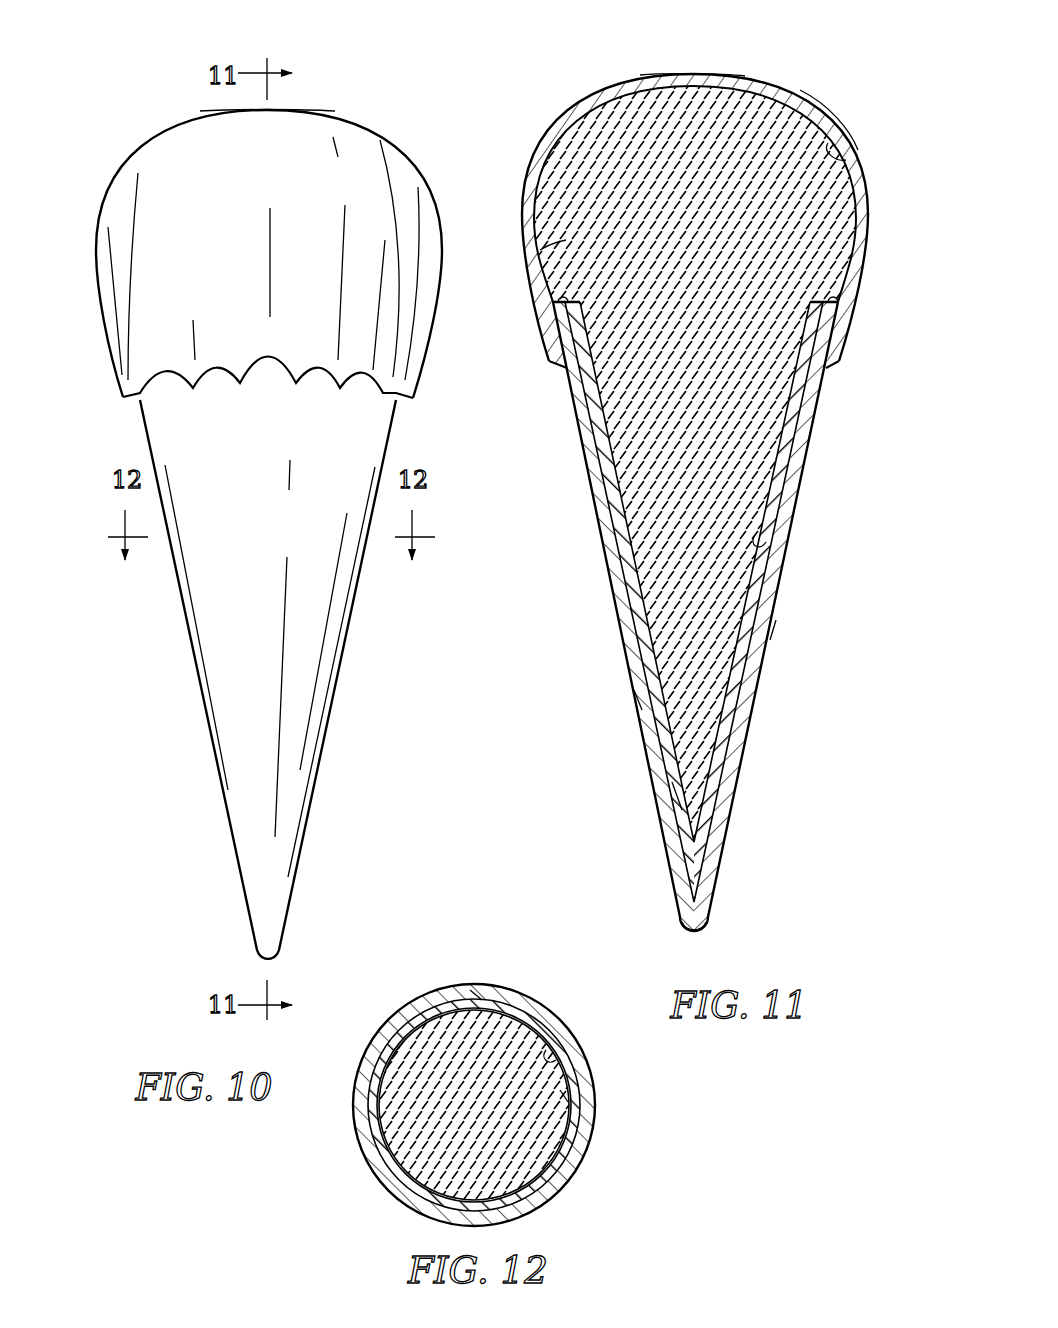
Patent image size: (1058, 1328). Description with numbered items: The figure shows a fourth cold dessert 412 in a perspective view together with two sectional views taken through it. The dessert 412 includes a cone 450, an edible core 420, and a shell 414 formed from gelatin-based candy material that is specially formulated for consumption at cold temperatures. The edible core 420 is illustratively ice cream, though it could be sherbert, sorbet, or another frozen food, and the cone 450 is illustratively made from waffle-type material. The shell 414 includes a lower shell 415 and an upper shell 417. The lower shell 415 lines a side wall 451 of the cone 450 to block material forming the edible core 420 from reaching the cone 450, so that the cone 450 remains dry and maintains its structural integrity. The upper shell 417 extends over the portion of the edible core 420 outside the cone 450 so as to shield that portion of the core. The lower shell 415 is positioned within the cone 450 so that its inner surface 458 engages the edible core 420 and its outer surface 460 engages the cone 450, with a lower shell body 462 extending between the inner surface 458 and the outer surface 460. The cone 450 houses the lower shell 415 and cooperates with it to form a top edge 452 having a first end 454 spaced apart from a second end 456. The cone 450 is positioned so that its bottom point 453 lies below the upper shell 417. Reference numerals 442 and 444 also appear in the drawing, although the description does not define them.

In FIG. 10, the fourth cold dessert 412 is at (143, 119).
In FIG. 10, the shell 414 is at (116, 361).
In FIG. 11, the shell 414 is at (870, 275).
In FIG. 12, the shell 414 is at (584, 1100).
In FIG. 11, the lower shell 415 is at (781, 628).
In FIG. 10, the upper shell 417 is at (349, 106).
In FIG. 11, the upper shell 417 is at (781, 84).
In FIG. 11, the edible core 420 is at (658, 435).
In FIG. 12, the edible core 420 is at (423, 1128).
In FIG. 10, the cone 442 is at (216, 880).
In FIG. 11, the cone 442 is at (663, 893).
In FIG. 10, the upper dome portion 444 is at (426, 150).
In FIG. 11, the upper dome portion 444 is at (850, 115).
In FIG. 10, the cone 450 is at (320, 772).
In FIG. 11, the cone 450 is at (755, 700).
In FIG. 12, the cone 450 is at (592, 1138).
In FIG. 10, the side wall 451 is at (340, 670).
In FIG. 11, the side wall 451 is at (763, 660).
In FIG. 12, the side wall 451 is at (549, 1197).
In FIG. 11, the top edge 452 is at (586, 256).
In FIG. 10, the bottom point 453 is at (272, 962).
In FIG. 11, the bottom point 453 is at (700, 931).
In FIG. 11, the first end 454 is at (560, 300).
In FIG. 11, the second end 456 is at (838, 150).
In FIG. 11, the inner surface 458 is at (766, 540).
In FIG. 12, the inner surface 458 is at (552, 1052).
In FIG. 11, the outer surface 460 is at (640, 710).
In FIG. 12, the outer surface 460 is at (478, 988).
In FIG. 11, the lower shell body 462 is at (670, 783).